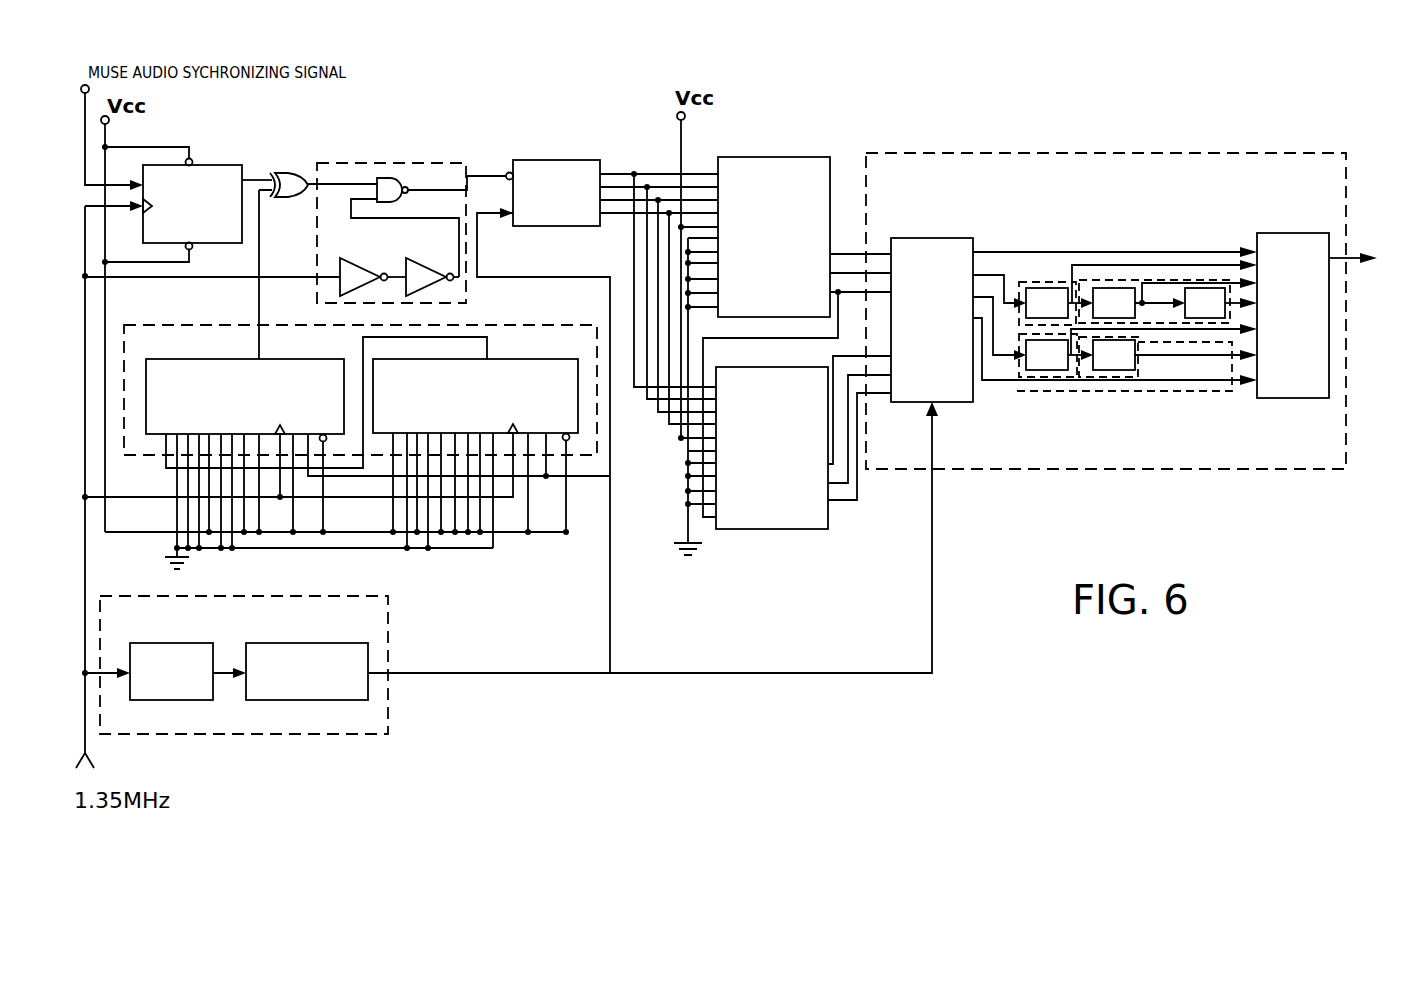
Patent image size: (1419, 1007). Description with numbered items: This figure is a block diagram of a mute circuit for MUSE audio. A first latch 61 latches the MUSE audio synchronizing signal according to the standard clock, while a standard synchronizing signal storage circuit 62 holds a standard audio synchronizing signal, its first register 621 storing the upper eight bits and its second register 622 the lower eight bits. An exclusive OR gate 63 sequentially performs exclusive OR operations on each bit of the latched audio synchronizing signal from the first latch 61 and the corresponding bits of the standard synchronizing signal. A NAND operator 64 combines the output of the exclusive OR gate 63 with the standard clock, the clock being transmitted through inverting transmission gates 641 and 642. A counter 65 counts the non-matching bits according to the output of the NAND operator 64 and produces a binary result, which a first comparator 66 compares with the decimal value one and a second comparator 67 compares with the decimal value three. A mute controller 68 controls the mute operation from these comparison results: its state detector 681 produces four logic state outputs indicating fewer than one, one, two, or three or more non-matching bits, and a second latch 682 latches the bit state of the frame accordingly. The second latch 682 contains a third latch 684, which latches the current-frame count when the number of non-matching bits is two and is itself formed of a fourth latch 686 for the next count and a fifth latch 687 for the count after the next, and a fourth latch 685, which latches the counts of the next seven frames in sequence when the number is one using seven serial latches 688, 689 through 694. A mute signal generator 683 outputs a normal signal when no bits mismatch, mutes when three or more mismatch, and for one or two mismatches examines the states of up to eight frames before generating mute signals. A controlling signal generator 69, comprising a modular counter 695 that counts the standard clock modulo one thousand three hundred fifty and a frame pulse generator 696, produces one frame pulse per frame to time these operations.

The first latch 61 is at (215, 165).
The standard synchronizing signal storage circuit 62 is at (193, 325).
The first register 621 is at (215, 359).
The second register 622 is at (563, 359).
The exclusive OR gate 63 is at (291, 173).
The NAND operator 64 is at (396, 163).
The inverting transmission gate 641 is at (360, 247).
The inverting transmission gate 642 is at (430, 246).
The counter 65 is at (530, 160).
The first comparator 66 is at (790, 157).
The second comparator 67 is at (785, 367).
The mute controller 68 is at (950, 153).
The state detector 681 is at (930, 238).
The second latch 682 is at (1022, 282).
The mute signal generator 683 is at (1322, 233).
The third latch 684 is at (1030, 391).
The fourth latch 685 is at (1150, 280).
The fourth latch 686 is at (1057, 370).
The fifth latch 687 is at (1113, 377).
The latch 688 is at (1043, 288).
The latch 689 is at (1103, 288).
The latch 694 is at (1197, 288).
The controlling signal generator 69 is at (388, 645).
The modular 1350 counter 695 is at (185, 643).
The frame pulse generator 696 is at (330, 643).